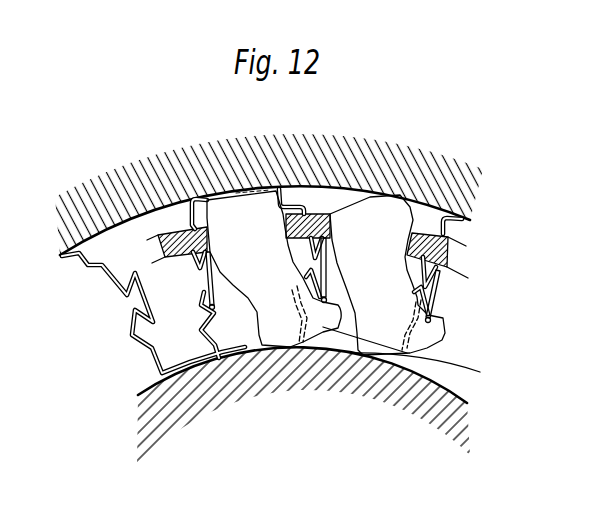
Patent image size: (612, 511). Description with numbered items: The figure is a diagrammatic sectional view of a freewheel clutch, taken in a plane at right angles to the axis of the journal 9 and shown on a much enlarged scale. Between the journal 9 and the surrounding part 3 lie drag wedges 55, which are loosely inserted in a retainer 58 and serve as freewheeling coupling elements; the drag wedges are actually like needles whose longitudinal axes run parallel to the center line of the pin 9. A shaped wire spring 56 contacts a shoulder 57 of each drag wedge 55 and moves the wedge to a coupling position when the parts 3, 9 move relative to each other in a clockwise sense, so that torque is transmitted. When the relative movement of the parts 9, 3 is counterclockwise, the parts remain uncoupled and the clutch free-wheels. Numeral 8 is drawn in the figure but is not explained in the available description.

The part 3 is at (322, 150).
The pole piece segment 8 is at (445, 301).
The journal 9 is at (412, 401).
The drag wedges 55 is at (279, 190).
The shaped wire spring 56 is at (147, 347).
The shoulder 57 is at (405, 351).
The retainer 58 is at (452, 247).